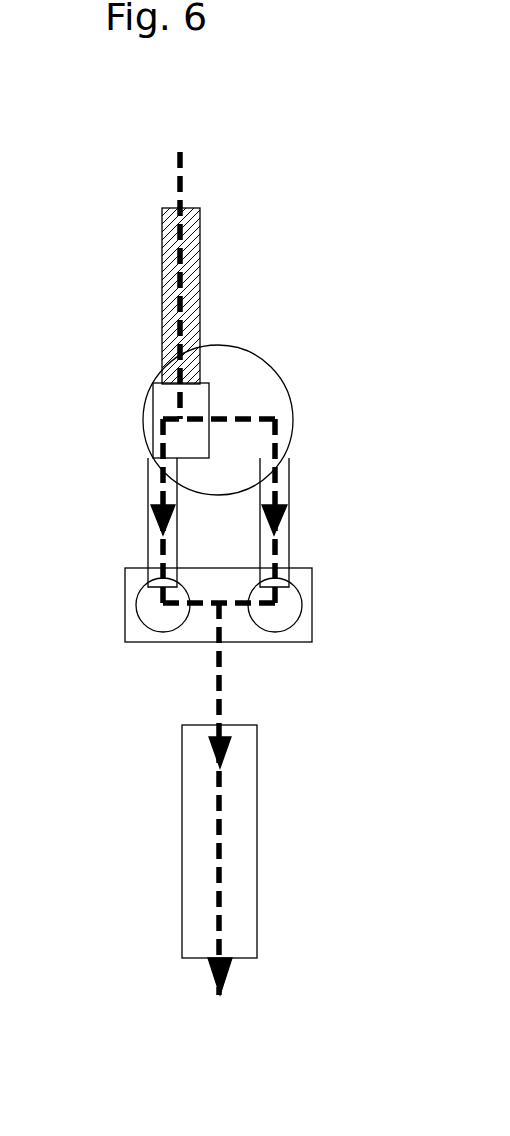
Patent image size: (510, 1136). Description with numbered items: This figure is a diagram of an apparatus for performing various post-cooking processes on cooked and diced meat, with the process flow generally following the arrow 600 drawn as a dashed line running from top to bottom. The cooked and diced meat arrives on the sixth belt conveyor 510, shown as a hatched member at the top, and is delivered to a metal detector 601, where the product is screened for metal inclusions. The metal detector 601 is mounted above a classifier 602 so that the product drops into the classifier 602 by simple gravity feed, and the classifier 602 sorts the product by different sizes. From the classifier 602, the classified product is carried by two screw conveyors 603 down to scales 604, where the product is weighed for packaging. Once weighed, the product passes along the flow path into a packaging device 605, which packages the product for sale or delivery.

The sixth belt conveyor 510 is at (162, 283).
The arrow 600 is at (183, 190).
The metal detector 601 is at (160, 398).
The classifier 602 is at (276, 405).
The screw conveyors 603 is at (155, 535).
The scales 604 is at (160, 625).
The packaging device 605 is at (196, 817).